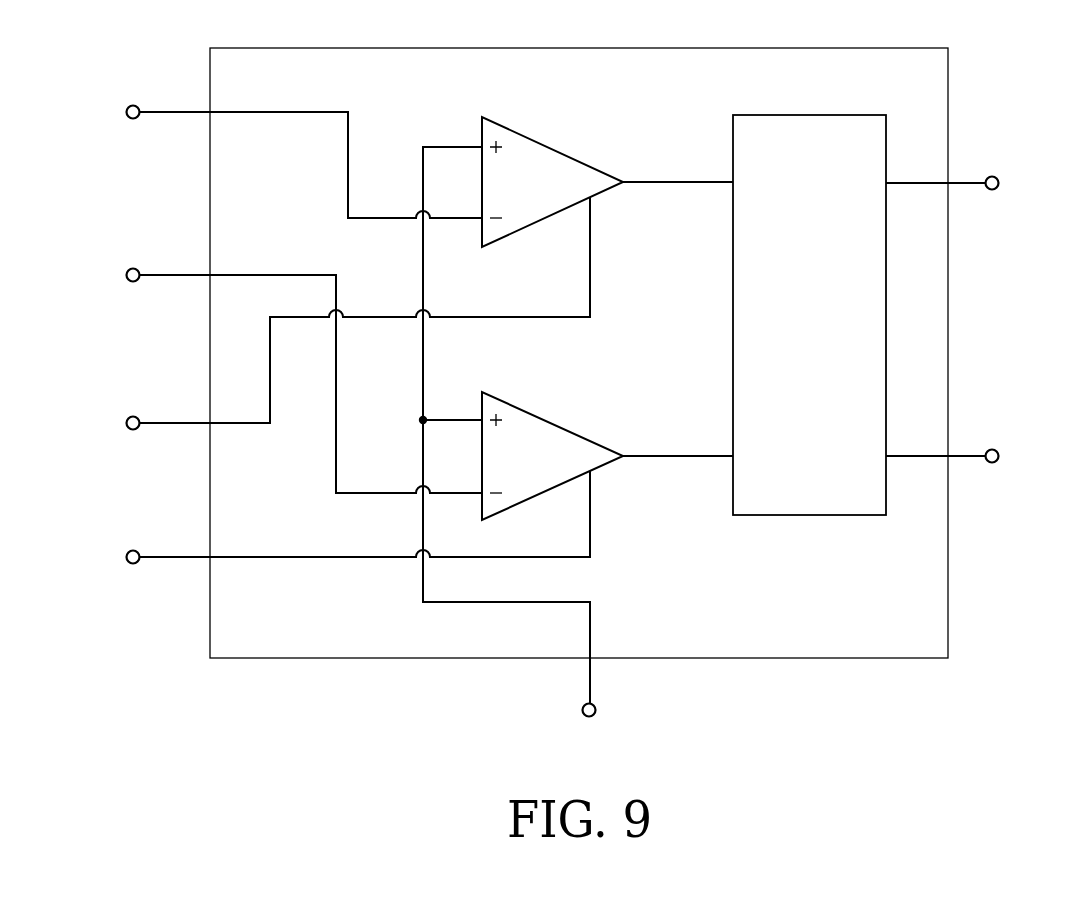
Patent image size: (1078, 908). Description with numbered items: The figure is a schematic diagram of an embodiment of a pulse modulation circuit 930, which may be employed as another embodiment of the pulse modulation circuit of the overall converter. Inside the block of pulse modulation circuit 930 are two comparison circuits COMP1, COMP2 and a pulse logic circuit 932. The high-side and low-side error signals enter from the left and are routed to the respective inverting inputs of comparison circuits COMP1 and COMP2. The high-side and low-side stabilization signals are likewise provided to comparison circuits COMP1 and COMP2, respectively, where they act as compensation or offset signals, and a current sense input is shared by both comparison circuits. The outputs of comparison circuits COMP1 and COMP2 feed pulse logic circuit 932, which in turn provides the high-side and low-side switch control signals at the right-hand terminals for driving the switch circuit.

The pulse modulation circuit 930 is at (671, 48).
The pulse logic circuit 932 is at (792, 115).
The comparison circuit COMP1 is at (552, 182).
The comparison circuit COMP2 is at (552, 456).